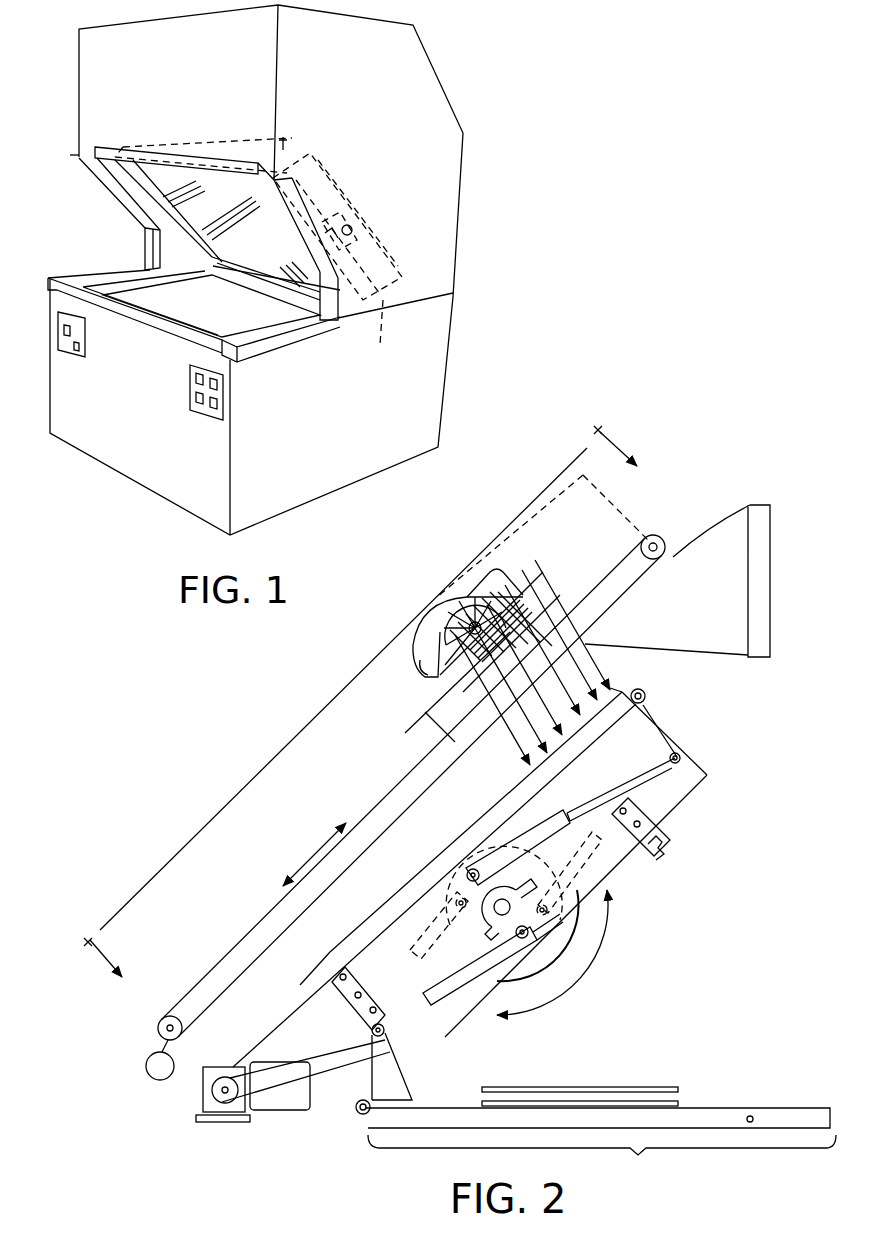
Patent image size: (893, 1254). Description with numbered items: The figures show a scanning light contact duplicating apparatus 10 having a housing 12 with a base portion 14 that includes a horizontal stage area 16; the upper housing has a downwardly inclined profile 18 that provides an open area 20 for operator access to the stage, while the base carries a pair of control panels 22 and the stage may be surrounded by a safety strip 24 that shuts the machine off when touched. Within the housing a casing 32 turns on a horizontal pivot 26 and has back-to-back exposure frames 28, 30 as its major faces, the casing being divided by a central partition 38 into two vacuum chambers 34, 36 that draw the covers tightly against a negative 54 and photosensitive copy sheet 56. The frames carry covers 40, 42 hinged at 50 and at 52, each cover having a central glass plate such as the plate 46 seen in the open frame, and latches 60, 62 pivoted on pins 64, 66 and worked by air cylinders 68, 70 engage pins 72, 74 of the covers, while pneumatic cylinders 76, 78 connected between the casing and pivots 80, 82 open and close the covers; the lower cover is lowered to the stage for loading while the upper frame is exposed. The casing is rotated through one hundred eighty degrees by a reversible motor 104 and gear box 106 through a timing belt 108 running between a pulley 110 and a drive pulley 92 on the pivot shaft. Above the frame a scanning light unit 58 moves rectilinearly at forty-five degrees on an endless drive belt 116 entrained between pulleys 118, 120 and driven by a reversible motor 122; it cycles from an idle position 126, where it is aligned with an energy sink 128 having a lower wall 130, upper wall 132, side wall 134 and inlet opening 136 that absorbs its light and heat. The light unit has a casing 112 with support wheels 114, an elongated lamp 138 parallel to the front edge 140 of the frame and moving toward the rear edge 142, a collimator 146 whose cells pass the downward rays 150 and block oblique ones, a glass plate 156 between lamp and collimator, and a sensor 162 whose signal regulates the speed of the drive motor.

In FIG. 1, the scanning light contact duplicating apparatus 10 is at (72, 93).
In FIG. 1, the housing 12 is at (425, 90).
In FIG. 1, the base portion 14 is at (420, 382).
In FIG. 1, the stage area 16 is at (117, 263).
In FIG. 2, the stage area 16 is at (602, 1160).
In FIG. 1, the inclined profile 18 is at (115, 190).
In FIG. 1, the open area 20 is at (66, 268).
In FIG. 1, the control panels 22 is at (190, 385).
In FIG. 1, the safety strip 24 is at (132, 322).
In FIG. 2, the horizontal pivot 26 is at (498, 906).
In FIG. 1, the exposure frame 28 is at (328, 172).
In FIG. 2, the exposure frame 28 is at (562, 787).
In FIG. 1, the exposure frame 30 is at (240, 218).
In FIG. 2, the exposure frame 30 is at (628, 862).
In FIG. 1, the casing 32 is at (290, 140).
In FIG. 2, the casing 32 is at (676, 724).
In FIG. 1, the vacuum chamber 34 is at (383, 253).
In FIG. 1, the vacuum chamber 36 is at (380, 335).
In FIG. 1, the central partition 38 is at (345, 196).
In FIG. 2, the top cover 40 is at (510, 797).
In FIG. 1, the bottom cover 42 is at (178, 227).
In FIG. 2, the bottom cover 42 is at (797, 1110).
In FIG. 1, the glass window 46 is at (211, 210).
In FIG. 2, the hinge 50 is at (648, 694).
In FIG. 2, the hinge 52 is at (360, 1114).
In FIG. 2, the negative 54 is at (530, 1100).
In FIG. 2, the photosensitive copy sheet 56 is at (630, 1086).
In FIG. 2, the scanning light unit 58 is at (410, 650).
In FIG. 2, the latch 60 is at (376, 1022).
In FIG. 2, the latch 62 is at (645, 840).
In FIG. 2, the pin 64 is at (438, 948).
In FIG. 2, the pin 66 is at (655, 820).
In FIG. 2, the air cylinder 68 is at (504, 893).
In FIG. 2, the air cylinder 70 is at (510, 902).
In FIG. 2, the pin 72 is at (368, 968).
In FIG. 2, the pin 74 is at (750, 1115).
In FIG. 2, the pneumatic cylinder 76 is at (510, 860).
In FIG. 2, the pneumatic cylinder 78 is at (510, 985).
In FIG. 2, the pivot 80 is at (680, 757).
In FIG. 2, the pivot 82 is at (362, 1100).
In FIG. 2, the drive pulley 92 is at (555, 950).
In FIG. 2, the reversible motor 104 is at (282, 1112).
In FIG. 2, the gear box 106 is at (215, 1067).
In FIG. 2, the timing belt 108 is at (265, 1030).
In FIG. 2, the pulley 110 is at (228, 1104).
In FIG. 2, the casing 112 is at (420, 670).
In FIG. 2, the support wheels 114 is at (515, 580).
In FIG. 2, the endless drive belt 116 is at (380, 802).
In FIG. 2, the pulley 118 is at (653, 535).
In FIG. 2, the pulley 120 is at (157, 1034).
In FIG. 2, the reversible motor 122 is at (163, 1081).
In FIG. 2, the idle position 126 is at (583, 475).
In FIG. 2, the energy sink 128 is at (717, 507).
In FIG. 2, the lower wall 130 is at (712, 655).
In FIG. 2, the upper wall 132 is at (700, 534).
In FIG. 2, the side wall 134 is at (748, 593).
In FIG. 2, the inlet opening 136 is at (675, 558).
In FIG. 2, the lamp 138 is at (470, 622).
In FIG. 2, the front edge 140 is at (622, 690).
In FIG. 2, the rear edge 142 is at (293, 1000).
In FIG. 2, the collimator 146 is at (417, 730).
In FIG. 2, the rays 150 is at (553, 703).
In FIG. 2, the glass plate 156 is at (548, 620).
In FIG. 2, the sensor 162 is at (432, 637).